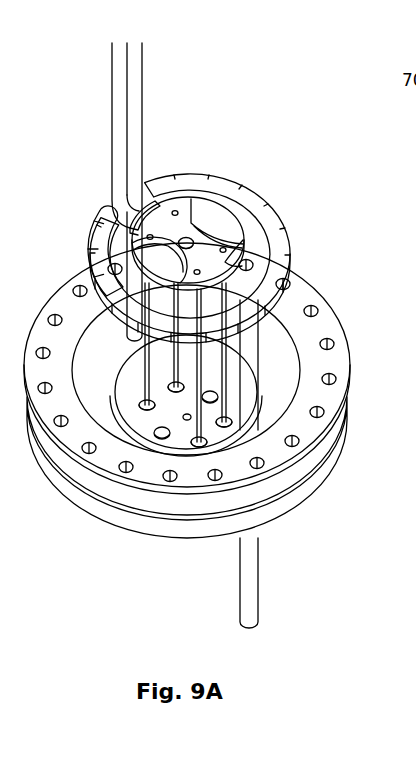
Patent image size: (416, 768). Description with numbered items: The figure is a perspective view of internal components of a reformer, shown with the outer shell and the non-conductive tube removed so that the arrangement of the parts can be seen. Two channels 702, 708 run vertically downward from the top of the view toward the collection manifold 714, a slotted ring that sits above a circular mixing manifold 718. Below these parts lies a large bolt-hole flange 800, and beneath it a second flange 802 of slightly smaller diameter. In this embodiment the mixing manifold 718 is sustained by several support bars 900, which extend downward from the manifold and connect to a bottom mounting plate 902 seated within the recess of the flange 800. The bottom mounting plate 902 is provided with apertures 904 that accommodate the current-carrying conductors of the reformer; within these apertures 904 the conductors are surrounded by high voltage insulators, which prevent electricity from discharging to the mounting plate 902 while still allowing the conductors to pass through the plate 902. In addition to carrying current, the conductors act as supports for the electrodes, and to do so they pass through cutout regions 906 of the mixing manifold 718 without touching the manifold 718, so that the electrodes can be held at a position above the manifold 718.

The channel 702 is at (135, 100).
The channel 708 is at (118, 92).
The collection manifold 714 is at (215, 183).
The mixing manifold 718 is at (207, 240).
The flange 800 is at (330, 332).
The flange 802 is at (320, 486).
The support bars 900 is at (200, 400).
The bottom mounting plate 902 is at (182, 434).
The apertures 904 is at (212, 397).
The cutout regions 906 is at (110, 257).